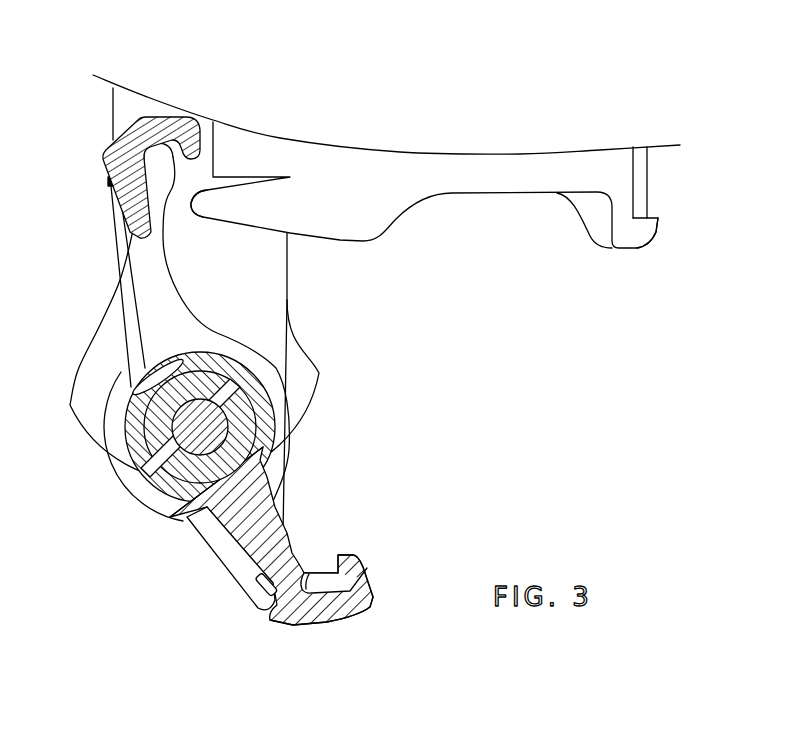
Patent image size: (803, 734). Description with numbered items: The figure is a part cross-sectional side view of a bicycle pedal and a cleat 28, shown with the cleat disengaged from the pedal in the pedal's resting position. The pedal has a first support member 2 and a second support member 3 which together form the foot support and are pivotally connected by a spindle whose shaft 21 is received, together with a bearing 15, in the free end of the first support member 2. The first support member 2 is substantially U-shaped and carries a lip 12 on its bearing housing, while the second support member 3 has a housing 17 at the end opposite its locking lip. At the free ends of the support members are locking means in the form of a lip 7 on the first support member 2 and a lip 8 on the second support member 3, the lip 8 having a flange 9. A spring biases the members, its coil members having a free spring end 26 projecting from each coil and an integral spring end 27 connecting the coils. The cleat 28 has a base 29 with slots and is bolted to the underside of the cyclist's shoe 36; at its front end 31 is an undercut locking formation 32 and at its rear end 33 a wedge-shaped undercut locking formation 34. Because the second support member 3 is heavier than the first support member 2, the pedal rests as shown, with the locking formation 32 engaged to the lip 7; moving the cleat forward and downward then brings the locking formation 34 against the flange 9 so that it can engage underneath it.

The first support member 2 is at (140, 256).
The second support member 3 is at (285, 538).
The lip 7 is at (122, 132).
The lip 8 is at (363, 607).
The flange 9 is at (353, 570).
The lip 12 is at (281, 488).
The bearing 15 is at (242, 379).
The housing 17 is at (265, 442).
The shaft 21 is at (230, 414).
The free spring end 26 is at (263, 585).
The integral spring end 27 is at (113, 212).
The cleat 28 is at (495, 212).
The base 29 is at (410, 193).
The front end 31 is at (238, 140).
The undercut locking formation 32 is at (203, 203).
The rear end 33 is at (626, 151).
The undercut locking formation 34 is at (650, 237).
The shoe 36 is at (113, 87).